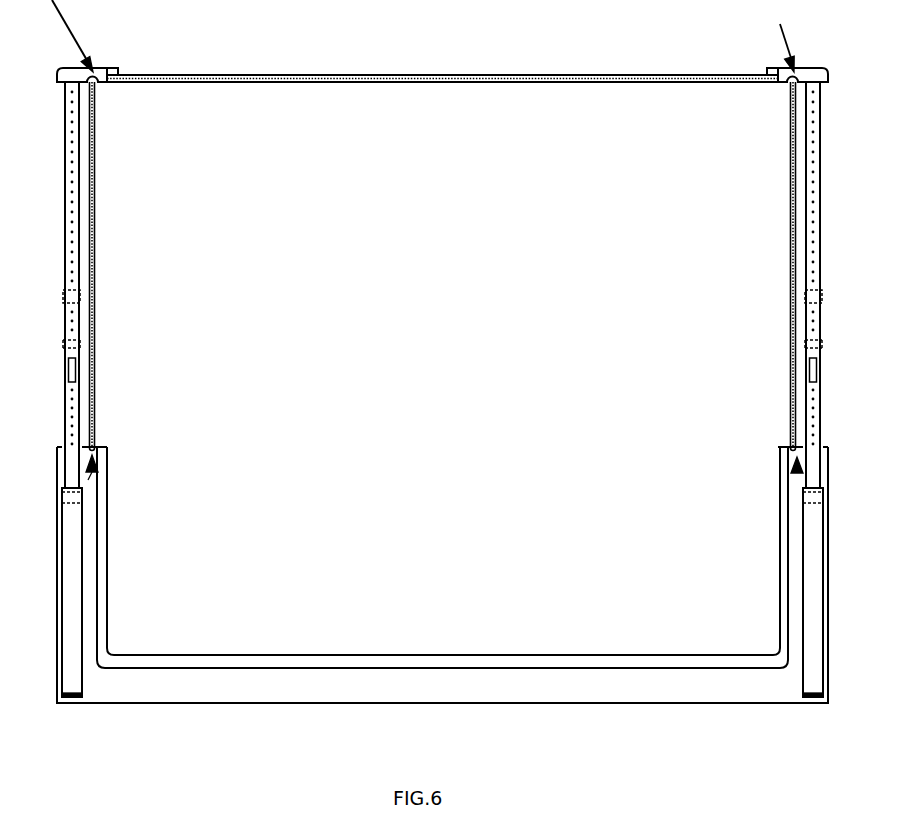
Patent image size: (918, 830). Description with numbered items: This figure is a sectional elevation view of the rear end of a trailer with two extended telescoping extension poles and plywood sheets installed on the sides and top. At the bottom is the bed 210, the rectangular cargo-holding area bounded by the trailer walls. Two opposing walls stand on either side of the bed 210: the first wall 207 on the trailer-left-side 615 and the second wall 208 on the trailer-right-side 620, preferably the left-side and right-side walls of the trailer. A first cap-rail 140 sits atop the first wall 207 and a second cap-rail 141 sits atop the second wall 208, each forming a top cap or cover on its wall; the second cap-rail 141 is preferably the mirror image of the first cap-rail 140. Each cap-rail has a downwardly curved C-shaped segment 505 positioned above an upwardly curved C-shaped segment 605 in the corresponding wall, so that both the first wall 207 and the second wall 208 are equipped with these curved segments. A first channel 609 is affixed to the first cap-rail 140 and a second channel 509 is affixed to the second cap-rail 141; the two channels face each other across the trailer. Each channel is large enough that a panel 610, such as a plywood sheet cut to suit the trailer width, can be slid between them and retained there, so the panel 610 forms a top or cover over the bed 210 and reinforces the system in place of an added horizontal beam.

The first cap-rail 140 is at (84, 76).
The second cap-rail 141 is at (812, 78).
The first channel 609 is at (115, 68).
The second channel 509 is at (770, 68).
The downwardly curved C-shaped segment 505 is at (783, 37).
The panel 610 is at (455, 83).
The upwardly curved C-shaped segment 605 is at (88, 480).
The first wall 207 is at (90, 553).
The second wall 208 is at (795, 602).
The bed 210 is at (326, 655).
The trailer-left-side 615 is at (46, 526).
The trailer-right-side 620 is at (839, 526).